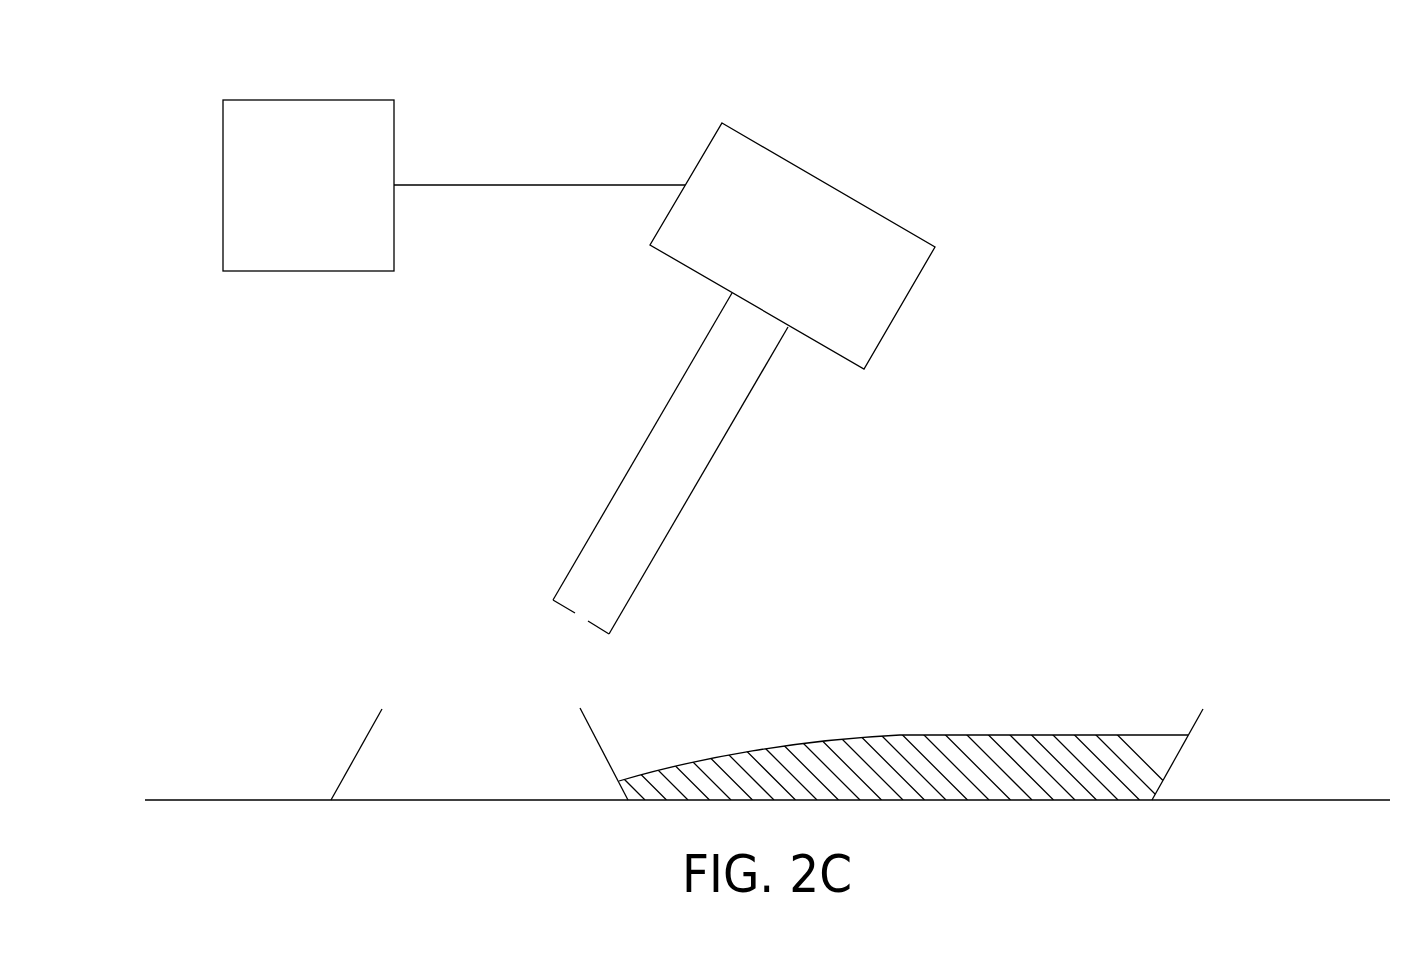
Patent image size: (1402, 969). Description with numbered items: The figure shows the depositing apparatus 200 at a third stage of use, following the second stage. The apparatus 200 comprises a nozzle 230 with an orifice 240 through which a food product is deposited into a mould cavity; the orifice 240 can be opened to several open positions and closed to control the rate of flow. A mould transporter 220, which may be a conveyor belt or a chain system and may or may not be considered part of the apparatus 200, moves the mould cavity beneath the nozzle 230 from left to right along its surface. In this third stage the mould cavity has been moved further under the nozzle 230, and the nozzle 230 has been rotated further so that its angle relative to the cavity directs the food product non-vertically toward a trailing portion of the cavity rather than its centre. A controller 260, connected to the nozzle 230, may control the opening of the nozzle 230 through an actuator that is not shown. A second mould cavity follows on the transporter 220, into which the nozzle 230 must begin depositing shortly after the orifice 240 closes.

The depositing apparatus 200 is at (1091, 66).
The mould transporter 220 is at (1323, 800).
The nozzle 230 is at (793, 103).
The orifice 240 is at (583, 617).
The controller 260 is at (328, 196).